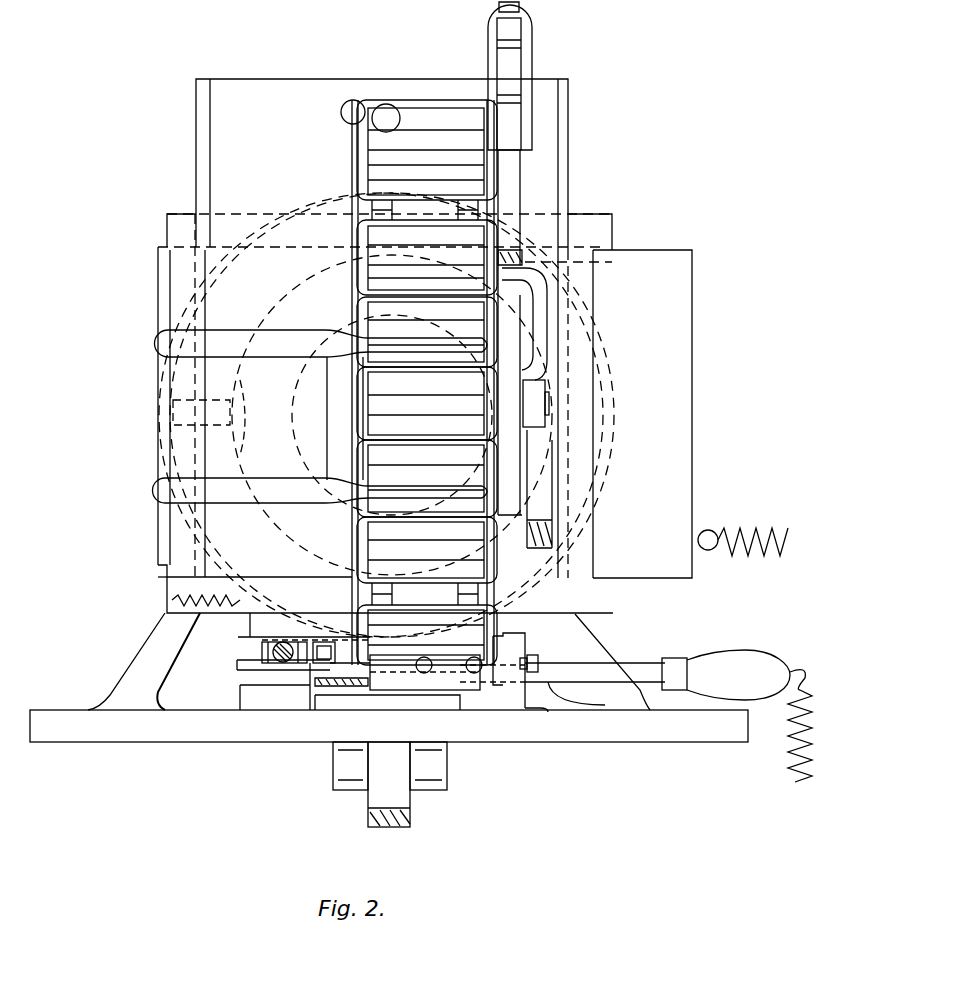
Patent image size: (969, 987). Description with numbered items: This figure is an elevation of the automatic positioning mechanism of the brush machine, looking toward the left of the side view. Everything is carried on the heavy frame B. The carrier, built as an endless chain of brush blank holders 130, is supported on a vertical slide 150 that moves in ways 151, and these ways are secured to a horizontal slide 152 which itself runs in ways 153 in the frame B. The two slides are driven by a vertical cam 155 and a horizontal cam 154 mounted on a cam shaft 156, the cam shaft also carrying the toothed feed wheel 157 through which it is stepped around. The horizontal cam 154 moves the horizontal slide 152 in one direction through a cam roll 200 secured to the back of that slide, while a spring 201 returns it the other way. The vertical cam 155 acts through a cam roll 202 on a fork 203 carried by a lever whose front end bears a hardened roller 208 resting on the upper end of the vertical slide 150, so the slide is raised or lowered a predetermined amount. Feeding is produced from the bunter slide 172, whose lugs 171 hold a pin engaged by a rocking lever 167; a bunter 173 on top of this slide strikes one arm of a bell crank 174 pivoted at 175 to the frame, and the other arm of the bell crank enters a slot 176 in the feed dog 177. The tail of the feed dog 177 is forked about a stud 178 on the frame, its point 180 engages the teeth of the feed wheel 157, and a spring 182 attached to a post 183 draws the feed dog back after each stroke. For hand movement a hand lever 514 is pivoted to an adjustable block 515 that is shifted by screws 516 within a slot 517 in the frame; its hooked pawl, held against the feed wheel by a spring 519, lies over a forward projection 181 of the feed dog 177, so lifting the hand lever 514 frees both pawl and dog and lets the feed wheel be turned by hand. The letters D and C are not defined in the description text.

The vertical slide 150 is at (240, 105).
The ways 151 is at (170, 278).
The horizontal slide 152 is at (160, 258).
The ways 153 is at (176, 222).
The horizontal cam 154 is at (165, 535).
The vertical cam 155 is at (620, 292).
The cam shaft 156 is at (305, 372).
The feed wheel 157 is at (640, 470).
The upper arm D is at (152, 340).
The lower arm C is at (150, 490).
The cam roll 200 is at (160, 460).
The brush blank holders 130 is at (355, 554).
The fork 203 is at (356, 112).
The hardened roller 208 is at (384, 104).
The cam roll 202 is at (400, 280).
The spring 201 is at (758, 530).
The frame B is at (132, 742).
The point 180 is at (415, 770).
The lugs 171 is at (335, 780).
The rocking lever 167 is at (375, 812).
The bell crank 174 is at (262, 652).
The pivot 175 is at (324, 652).
The bunter 173 is at (275, 668).
The spring 182 is at (190, 620).
The post 183 is at (165, 616).
The stud 178 is at (285, 690).
The feed dog 177 is at (235, 690).
The bunter slide 172 is at (295, 700).
The slot 176 is at (335, 688).
The forward projection 181 is at (440, 700).
The screws 516 is at (570, 760).
The slot 517 is at (512, 648).
The adjustable block 515 is at (505, 665).
The hand lever 514 is at (612, 672).
The spring 519 is at (790, 755).